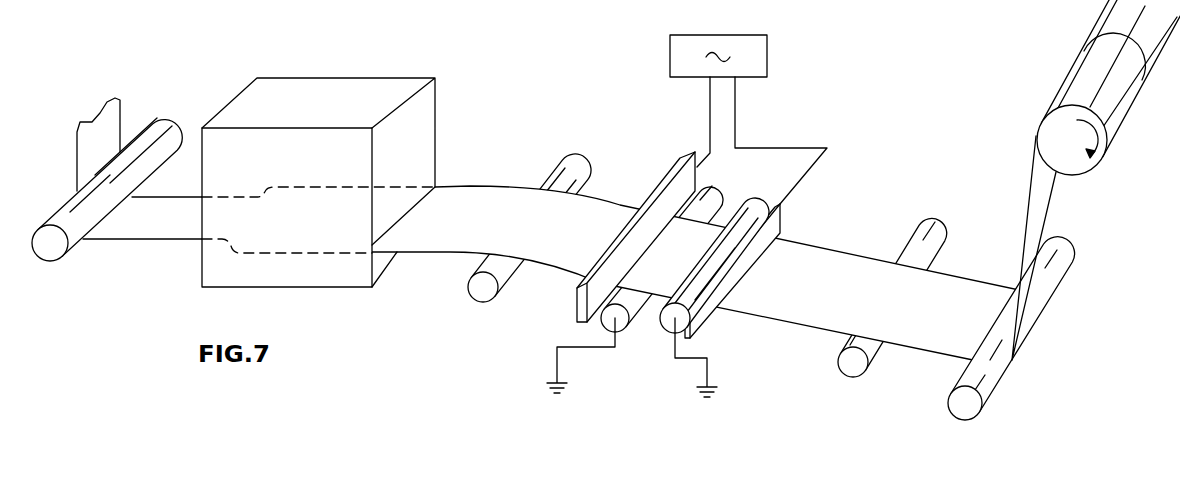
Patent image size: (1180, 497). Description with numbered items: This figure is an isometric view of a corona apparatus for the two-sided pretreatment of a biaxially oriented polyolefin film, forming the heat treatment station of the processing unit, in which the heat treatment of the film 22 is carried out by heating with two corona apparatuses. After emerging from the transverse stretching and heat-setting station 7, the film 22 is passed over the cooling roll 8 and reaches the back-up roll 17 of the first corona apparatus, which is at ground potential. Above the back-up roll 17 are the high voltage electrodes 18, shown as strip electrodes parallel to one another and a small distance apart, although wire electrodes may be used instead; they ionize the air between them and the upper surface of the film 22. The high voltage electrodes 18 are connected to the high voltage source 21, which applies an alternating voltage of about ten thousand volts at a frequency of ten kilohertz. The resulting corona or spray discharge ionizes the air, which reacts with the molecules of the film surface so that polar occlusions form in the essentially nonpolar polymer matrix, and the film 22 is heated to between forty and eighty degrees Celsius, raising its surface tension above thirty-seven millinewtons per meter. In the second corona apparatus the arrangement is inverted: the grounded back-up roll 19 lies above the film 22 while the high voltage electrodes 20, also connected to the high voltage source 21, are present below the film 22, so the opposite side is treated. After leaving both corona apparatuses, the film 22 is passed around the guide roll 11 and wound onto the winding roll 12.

The transverse stretching and heat-setting station 7 is at (302, 279).
The cooling roll 8 is at (483, 289).
The guide roll 11 is at (948, 392).
The winding roll 12 is at (1077, 65).
The back-up roll 17 is at (707, 191).
The high voltage electrodes 18 is at (678, 158).
The back-up roll 19 is at (760, 200).
The high voltage electrodes 20 is at (780, 218).
The high voltage source 21 is at (672, 48).
The film 22 is at (487, 197).